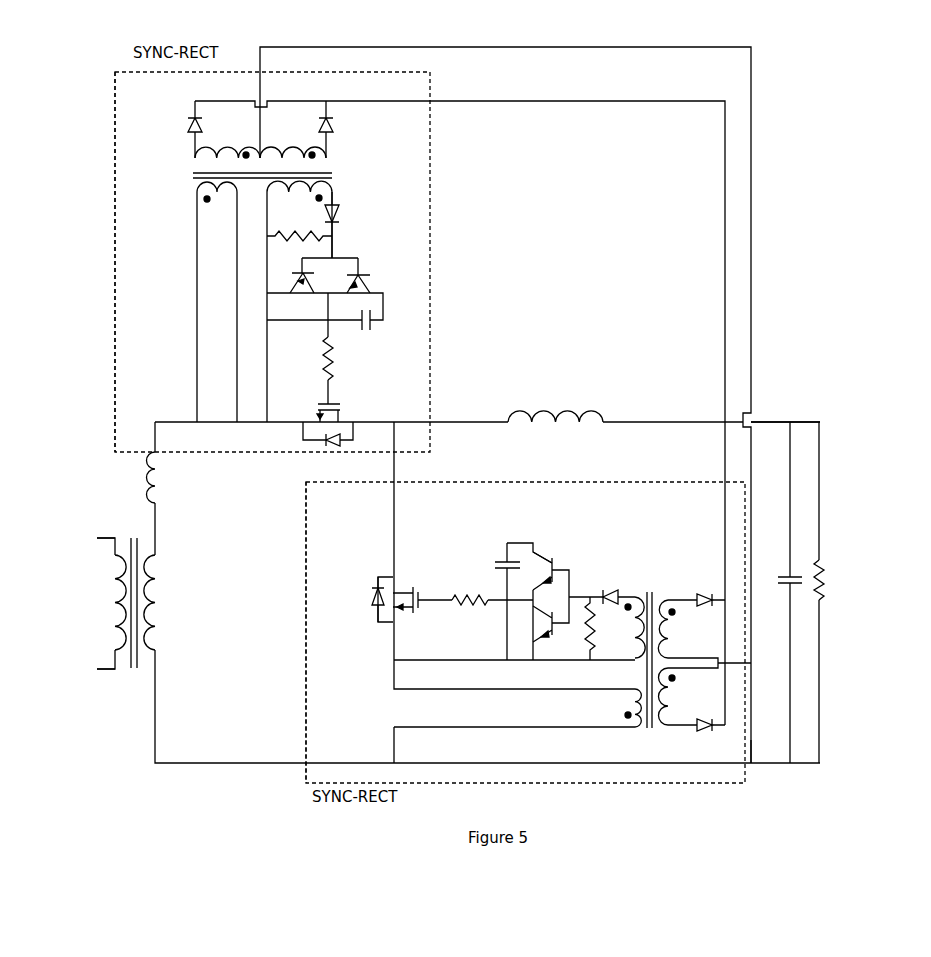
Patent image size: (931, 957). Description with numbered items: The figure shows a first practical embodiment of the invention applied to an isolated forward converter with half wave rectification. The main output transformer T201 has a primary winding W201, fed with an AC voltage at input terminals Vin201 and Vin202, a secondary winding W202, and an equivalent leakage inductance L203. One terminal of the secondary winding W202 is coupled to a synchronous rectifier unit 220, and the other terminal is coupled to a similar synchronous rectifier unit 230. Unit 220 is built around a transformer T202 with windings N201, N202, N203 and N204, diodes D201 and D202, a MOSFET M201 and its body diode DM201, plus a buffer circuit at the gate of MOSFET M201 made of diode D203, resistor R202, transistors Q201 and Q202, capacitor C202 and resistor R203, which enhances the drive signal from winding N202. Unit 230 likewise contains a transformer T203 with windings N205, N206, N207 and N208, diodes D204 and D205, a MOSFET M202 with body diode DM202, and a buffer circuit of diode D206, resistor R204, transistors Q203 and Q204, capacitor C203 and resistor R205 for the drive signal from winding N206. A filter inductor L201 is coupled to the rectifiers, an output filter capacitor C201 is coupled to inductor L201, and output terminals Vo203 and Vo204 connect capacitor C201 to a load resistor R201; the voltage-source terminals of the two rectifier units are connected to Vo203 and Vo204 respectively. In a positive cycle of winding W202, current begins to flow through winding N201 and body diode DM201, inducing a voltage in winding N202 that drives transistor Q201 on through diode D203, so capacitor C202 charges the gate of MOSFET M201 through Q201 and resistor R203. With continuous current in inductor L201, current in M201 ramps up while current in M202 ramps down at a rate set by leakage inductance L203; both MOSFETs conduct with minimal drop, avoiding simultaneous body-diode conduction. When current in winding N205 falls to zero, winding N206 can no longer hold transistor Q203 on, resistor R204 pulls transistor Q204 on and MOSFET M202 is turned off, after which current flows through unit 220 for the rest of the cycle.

The synchronous rectifier unit 220 is at (113, 156).
The synchronous rectifier unit 230 is at (305, 697).
The diode D201 is at (336, 136).
The diode D202 is at (185, 129).
The diode D203 is at (358, 213).
The diode D204 is at (712, 578).
The diode D205 is at (700, 735).
The diode D206 is at (615, 592).
The winding N201 is at (222, 196).
The winding N202 is at (292, 194).
The winding N203 is at (283, 155).
The winding N204 is at (232, 150).
The winding N205 is at (626, 698).
The winding N206 is at (632, 640).
The winding N207 is at (690, 638).
The winding N208 is at (688, 698).
The transformer T201 is at (135, 535).
The transformer T202 is at (190, 174).
The transformer T203 is at (652, 734).
The load resistor R201 is at (832, 570).
The resistor R202 is at (318, 240).
The resistor R203 is at (338, 350).
The resistor R204 is at (597, 645).
The resistor R205 is at (485, 607).
The output filter capacitor C201 is at (782, 578).
The capacitor C202 is at (372, 325).
The capacitor C203 is at (492, 567).
The transistor Q201 is at (376, 283).
The transistor Q202 is at (306, 293).
The transistor Q203 is at (547, 555).
The transistor Q204 is at (565, 632).
The MOSFET M201 is at (348, 420).
The MOSFET M202 is at (400, 585).
The body diode DM201 is at (330, 447).
The body diode DM202 is at (380, 608).
The filter inductor L201 is at (570, 397).
The leakage inductance L203 is at (157, 465).
The primary winding W201 is at (117, 610).
The secondary winding W202 is at (163, 609).
The input terminal Vin201 is at (97, 538).
The input terminal Vin202 is at (97, 669).
The output terminal Vo203 is at (822, 404).
The output terminal Vo204 is at (753, 766).